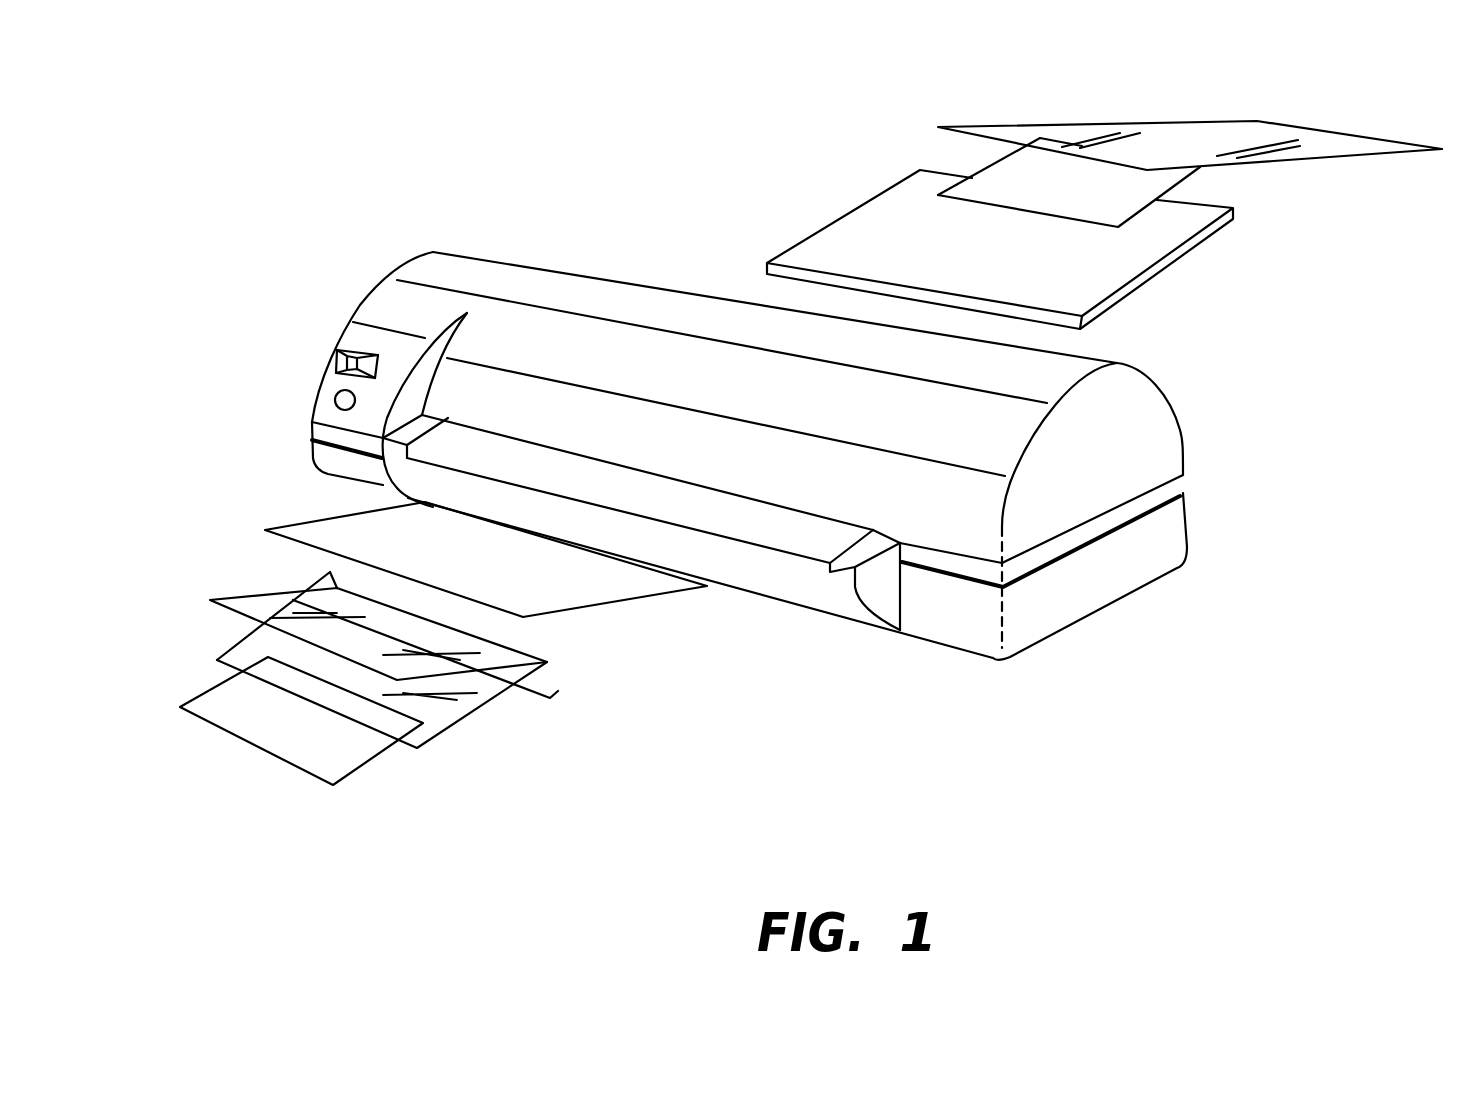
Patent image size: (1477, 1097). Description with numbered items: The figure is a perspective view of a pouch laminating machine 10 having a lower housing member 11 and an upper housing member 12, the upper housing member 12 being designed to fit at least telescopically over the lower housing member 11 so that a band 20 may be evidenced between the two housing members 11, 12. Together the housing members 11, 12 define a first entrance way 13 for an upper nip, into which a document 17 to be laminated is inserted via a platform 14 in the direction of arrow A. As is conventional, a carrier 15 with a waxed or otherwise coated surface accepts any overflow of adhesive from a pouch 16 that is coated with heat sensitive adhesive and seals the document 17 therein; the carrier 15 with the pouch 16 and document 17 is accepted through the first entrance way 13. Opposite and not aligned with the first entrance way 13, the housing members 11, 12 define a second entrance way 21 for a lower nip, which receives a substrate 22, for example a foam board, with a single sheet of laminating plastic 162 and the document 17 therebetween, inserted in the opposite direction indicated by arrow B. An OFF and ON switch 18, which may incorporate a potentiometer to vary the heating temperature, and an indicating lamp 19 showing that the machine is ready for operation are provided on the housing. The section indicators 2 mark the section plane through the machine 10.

The pouch laminating machine 10 is at (211, 233).
The lower housing member 11 is at (1137, 570).
The upper housing member 12 is at (514, 272).
The first entrance way 13 is at (837, 527).
The platform 14 is at (515, 453).
The carrier 15 is at (566, 682).
The pouch 16 is at (460, 710).
The document 17 is at (1006, 170).
The OFF and ON switch 18 is at (340, 358).
The indicating lamp 19 is at (335, 401).
The band 20 is at (1062, 550).
The second entrance way 21 is at (678, 274).
The substrate 22 is at (833, 232).
The backing sheet 162 is at (1194, 130).
The arrow A is at (563, 523).
The arrow B is at (910, 318).
The section line 2- 2 is at (1247, 408).